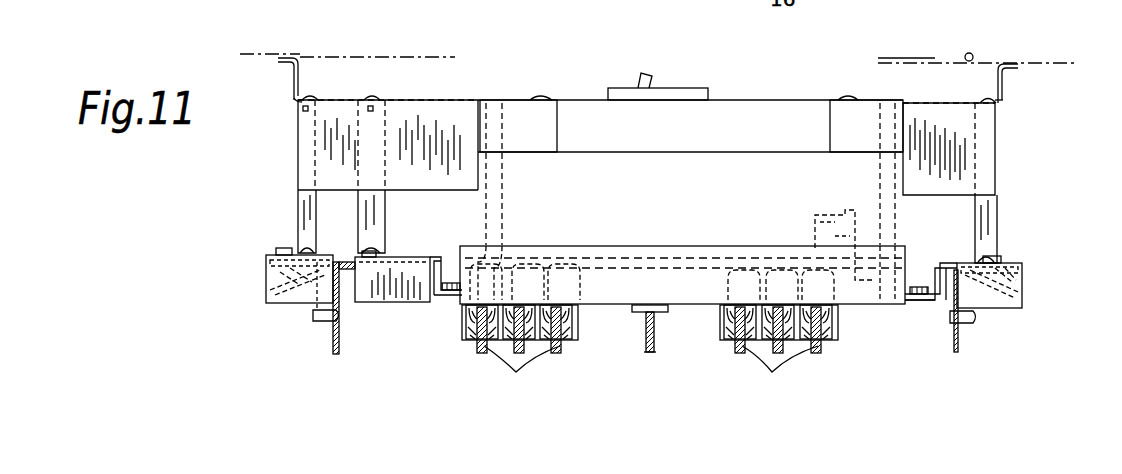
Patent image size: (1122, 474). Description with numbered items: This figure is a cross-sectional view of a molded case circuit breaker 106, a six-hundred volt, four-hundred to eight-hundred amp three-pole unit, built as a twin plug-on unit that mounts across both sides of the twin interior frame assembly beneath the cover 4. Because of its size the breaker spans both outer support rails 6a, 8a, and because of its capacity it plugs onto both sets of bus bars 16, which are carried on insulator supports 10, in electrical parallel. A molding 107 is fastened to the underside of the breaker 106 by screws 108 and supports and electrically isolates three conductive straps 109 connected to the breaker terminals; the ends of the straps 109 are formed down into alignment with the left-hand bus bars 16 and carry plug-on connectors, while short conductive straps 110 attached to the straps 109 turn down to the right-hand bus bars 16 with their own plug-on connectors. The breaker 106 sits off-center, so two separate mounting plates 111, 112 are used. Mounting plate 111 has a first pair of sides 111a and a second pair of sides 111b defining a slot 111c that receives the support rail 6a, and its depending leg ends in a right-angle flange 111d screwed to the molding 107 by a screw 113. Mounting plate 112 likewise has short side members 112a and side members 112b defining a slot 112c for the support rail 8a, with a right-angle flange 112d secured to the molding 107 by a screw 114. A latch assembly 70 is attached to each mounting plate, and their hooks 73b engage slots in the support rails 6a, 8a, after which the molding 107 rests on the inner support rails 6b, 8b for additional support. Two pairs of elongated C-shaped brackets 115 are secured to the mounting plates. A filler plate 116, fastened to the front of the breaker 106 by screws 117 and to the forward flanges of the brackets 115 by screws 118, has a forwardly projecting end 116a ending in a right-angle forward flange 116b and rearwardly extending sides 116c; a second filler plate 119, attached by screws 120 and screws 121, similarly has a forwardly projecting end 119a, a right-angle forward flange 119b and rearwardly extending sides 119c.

The cover 4 is at (385, 55).
The outer support rail 6a is at (331, 352).
The inner support rail 6b is at (645, 350).
The outer support rail 8a is at (965, 346).
The inner support rail 8b is at (658, 350).
The insulator support 10 is at (464, 332).
The bus bar 16 is at (650, 354).
The latch assembly 70 is at (258, 277).
The hook 73b is at (317, 316).
The molded case circuit breaker 106 is at (716, 92).
The molding 107 is at (625, 245).
The screws 108 is at (504, 215).
The conductive straps 109 is at (572, 250).
The short conductive straps 110 is at (810, 262).
The mounting plate 111 is at (272, 255).
The first pair of sides 111a is at (388, 305).
The second pair of sides 111b is at (268, 297).
The slot 111c is at (345, 305).
The right-angle flange 111d is at (446, 305).
The mounting plate 112 is at (1018, 262).
The first pair of short side members 112a is at (946, 292).
The second set of side members 112b is at (1022, 290).
The slot 112c is at (952, 300).
The right-angle flange 112d is at (926, 302).
The screw 113 is at (447, 282).
The screw 114 is at (920, 286).
The C-shaped brackets 115 is at (302, 205).
The filler plate 116 is at (462, 100).
The forwardly projecting end 116a is at (293, 96).
The right-angle forward flange 116b is at (289, 68).
The rearwardly extending sides 116c is at (320, 140).
The screws 117 is at (540, 98).
The screws 118 is at (368, 98).
The filler plate 119 is at (928, 102).
The forwardly projecting end 119a is at (1005, 98).
The right-angle forward flange 119b is at (1014, 76).
The rearwardly extending sides 119c is at (972, 140).
The screws 120 is at (846, 98).
The screws 121 is at (988, 100).